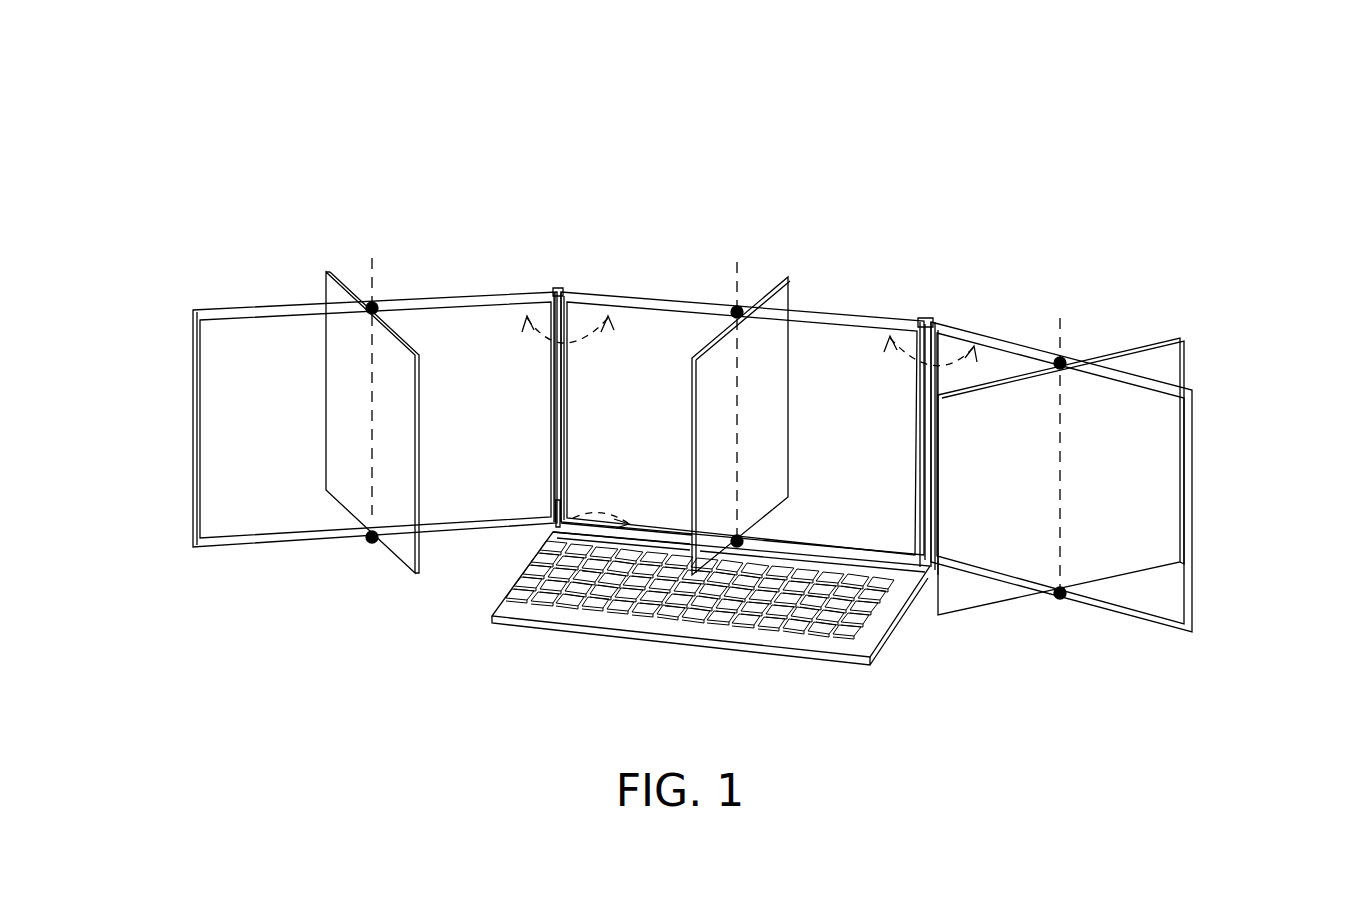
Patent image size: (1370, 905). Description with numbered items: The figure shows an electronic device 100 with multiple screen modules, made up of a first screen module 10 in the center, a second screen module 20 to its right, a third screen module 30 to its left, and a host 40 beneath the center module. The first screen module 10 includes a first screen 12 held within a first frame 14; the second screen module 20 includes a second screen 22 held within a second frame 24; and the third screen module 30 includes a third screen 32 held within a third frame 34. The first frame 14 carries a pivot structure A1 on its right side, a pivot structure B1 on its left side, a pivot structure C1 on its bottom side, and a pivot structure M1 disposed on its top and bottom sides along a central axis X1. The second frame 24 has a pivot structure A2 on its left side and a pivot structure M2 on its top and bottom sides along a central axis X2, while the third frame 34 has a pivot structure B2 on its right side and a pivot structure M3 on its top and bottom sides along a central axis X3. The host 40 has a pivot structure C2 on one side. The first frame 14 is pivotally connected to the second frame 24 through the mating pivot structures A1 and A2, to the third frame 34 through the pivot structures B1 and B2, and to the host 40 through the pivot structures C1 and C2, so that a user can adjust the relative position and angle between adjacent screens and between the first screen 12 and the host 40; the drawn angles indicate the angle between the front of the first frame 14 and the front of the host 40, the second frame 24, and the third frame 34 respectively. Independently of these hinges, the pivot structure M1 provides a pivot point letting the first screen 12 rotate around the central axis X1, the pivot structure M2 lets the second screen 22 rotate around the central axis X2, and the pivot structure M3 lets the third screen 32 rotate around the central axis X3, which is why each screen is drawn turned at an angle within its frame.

The electronic device 100 is at (1200, 116).
The first screen module 10 is at (565, 222).
The first screen 12 is at (780, 452).
The first frame 14 is at (635, 299).
The second screen module 20 is at (1212, 222).
The second screen 22 is at (1165, 478).
The second frame 24 is at (973, 331).
The third screen module 30 is at (192, 222).
The third screen 32 is at (412, 420).
The third frame 34 is at (213, 308).
The host 40 is at (843, 662).
The central axis X1 is at (736, 386).
The central axis X2 is at (1059, 444).
The central axis X3 is at (371, 372).
The pivot structure M1 is at (738, 308).
The pivot structure M2 is at (1062, 360).
The pivot structure M3 is at (375, 305).
The pivot structure A1 is at (921, 469).
The pivot structure A2 is at (927, 528).
The pivot structure B1 is at (568, 455).
The pivot structure B2 is at (553, 462).
The pivot structure C1 is at (656, 527).
The pivot structure C2 is at (547, 531).